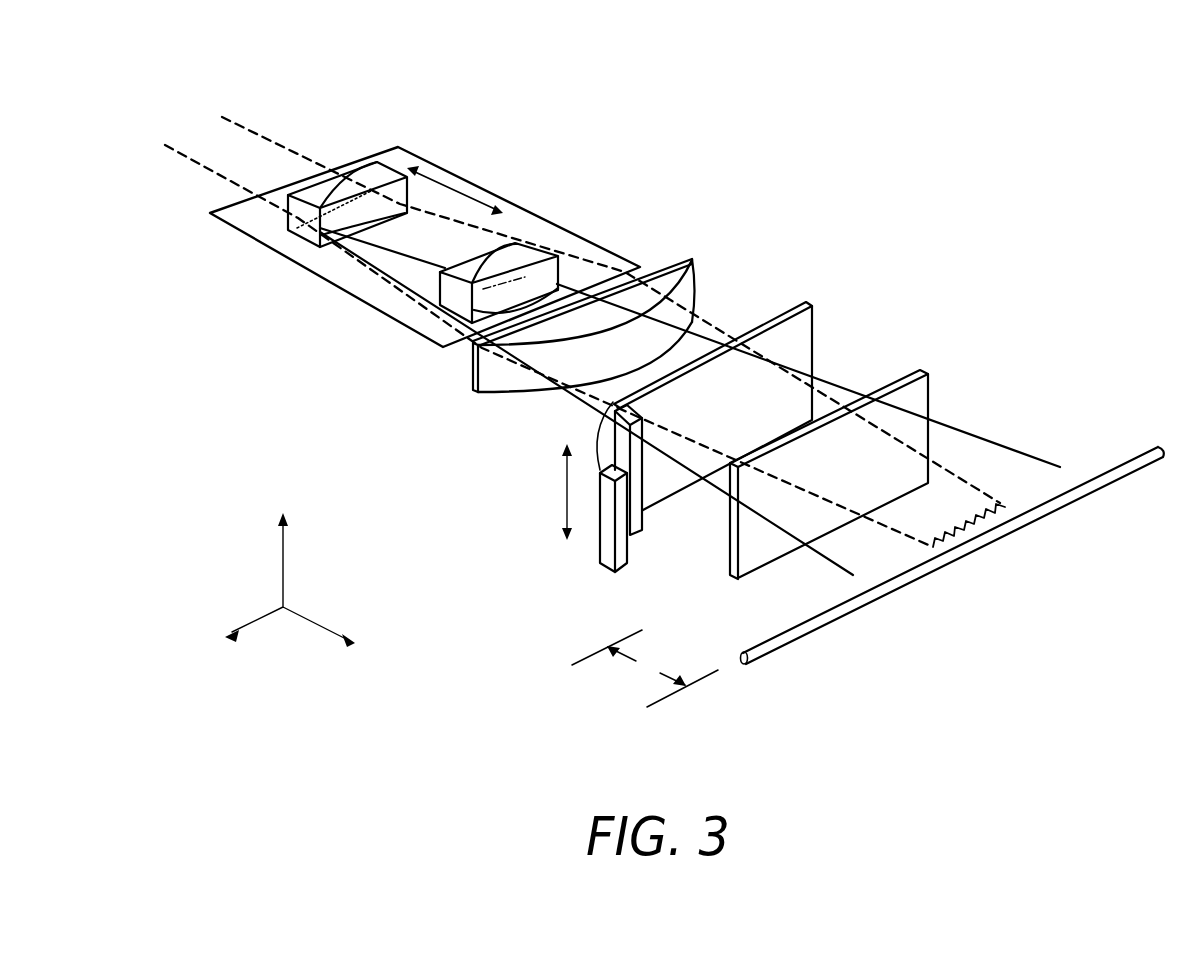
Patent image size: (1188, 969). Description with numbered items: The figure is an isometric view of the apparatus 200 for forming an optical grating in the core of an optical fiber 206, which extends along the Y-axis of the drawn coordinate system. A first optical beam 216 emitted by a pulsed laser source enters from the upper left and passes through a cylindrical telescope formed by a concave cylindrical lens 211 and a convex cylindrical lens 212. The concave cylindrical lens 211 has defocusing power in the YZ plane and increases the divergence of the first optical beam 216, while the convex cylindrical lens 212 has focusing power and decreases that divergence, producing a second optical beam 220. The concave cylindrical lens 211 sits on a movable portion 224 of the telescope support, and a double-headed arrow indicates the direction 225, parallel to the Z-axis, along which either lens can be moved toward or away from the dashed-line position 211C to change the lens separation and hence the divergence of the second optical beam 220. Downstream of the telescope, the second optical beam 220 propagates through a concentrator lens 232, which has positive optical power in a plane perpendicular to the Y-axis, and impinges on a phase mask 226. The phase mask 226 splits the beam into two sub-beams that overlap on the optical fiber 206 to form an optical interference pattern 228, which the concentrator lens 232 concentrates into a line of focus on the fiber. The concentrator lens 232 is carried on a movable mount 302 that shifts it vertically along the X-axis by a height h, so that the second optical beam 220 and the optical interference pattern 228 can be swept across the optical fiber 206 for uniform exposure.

The apparatus 200 is at (1003, 68).
The first optical beam 216 is at (286, 172).
The direction 225 is at (458, 193).
The concave cylindrical lens 211 is at (308, 236).
The position 211C is at (527, 240).
The movable portion 224 is at (404, 298).
The convex cylindrical lens 212 is at (690, 260).
The second optical beam 220 is at (743, 305).
The concentrator lens 232 is at (803, 358).
The phase mask 226 is at (912, 428).
The optical interference pattern 228 is at (955, 511).
The optical fiber 206 is at (1062, 499).
The movable mount 302 is at (578, 552).